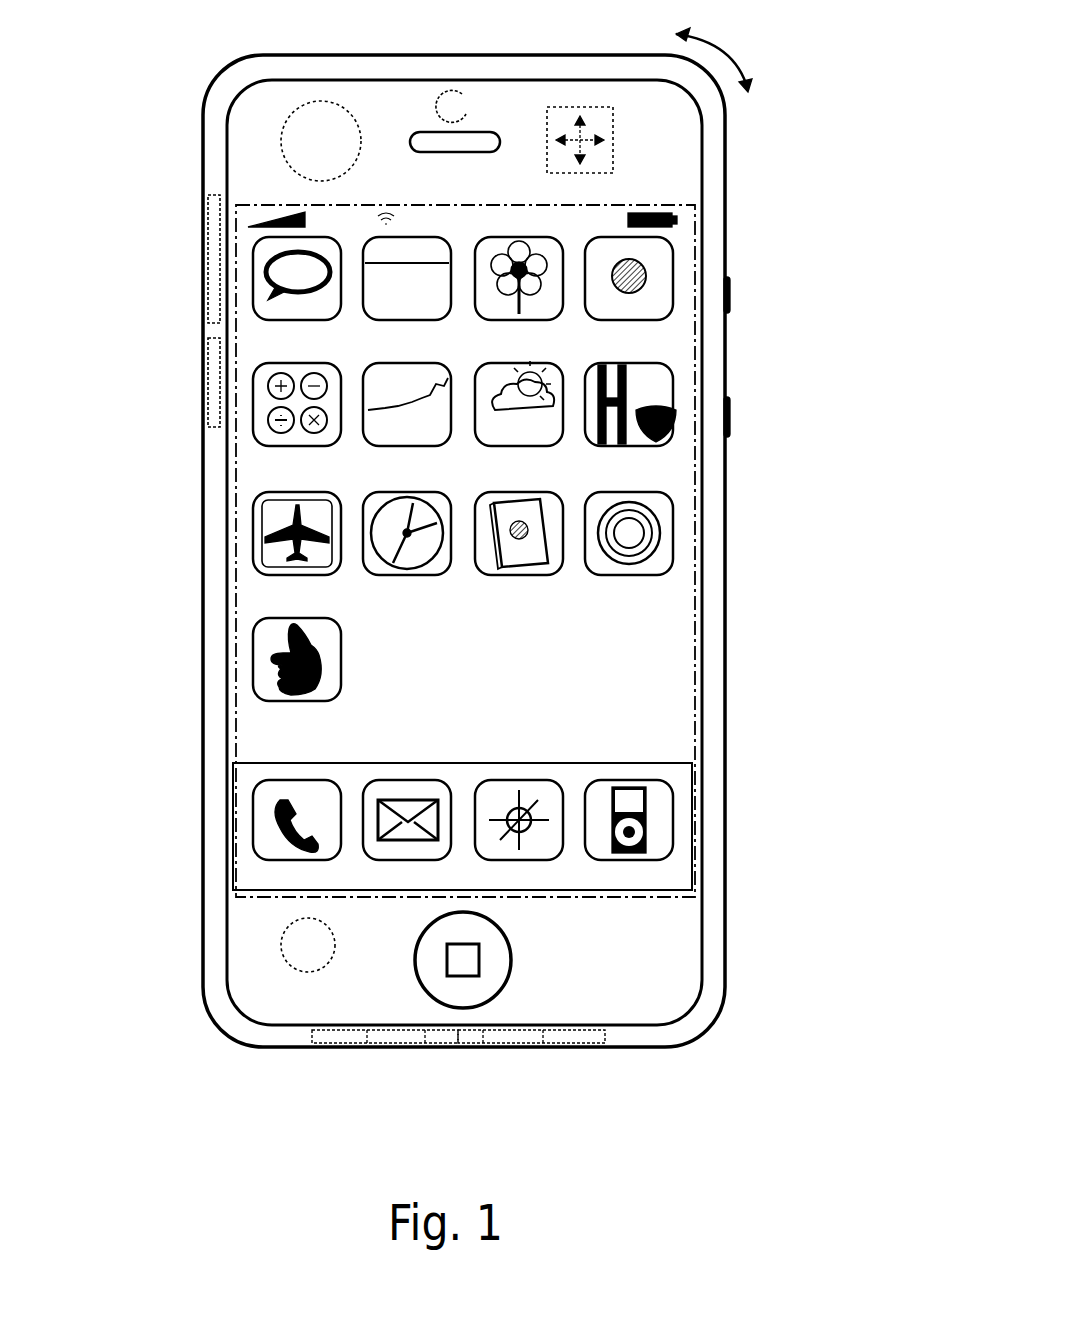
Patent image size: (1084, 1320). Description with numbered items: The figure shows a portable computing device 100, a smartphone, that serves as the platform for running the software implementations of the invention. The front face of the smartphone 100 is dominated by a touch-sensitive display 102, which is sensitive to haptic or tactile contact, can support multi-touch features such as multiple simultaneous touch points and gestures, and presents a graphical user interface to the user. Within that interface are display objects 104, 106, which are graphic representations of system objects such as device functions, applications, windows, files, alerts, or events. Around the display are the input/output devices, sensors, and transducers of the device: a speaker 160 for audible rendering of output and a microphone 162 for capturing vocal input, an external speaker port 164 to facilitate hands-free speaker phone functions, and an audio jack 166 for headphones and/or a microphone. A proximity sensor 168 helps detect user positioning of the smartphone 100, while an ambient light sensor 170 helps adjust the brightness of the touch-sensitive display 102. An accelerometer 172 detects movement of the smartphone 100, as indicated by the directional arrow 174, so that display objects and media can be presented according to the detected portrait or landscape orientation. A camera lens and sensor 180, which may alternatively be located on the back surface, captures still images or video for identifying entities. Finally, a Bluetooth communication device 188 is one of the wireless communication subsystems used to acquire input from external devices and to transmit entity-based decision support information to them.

The portable computing device 100 is at (581, 55).
The touch-sensitive display 102 is at (512, 534).
The display object 104 is at (687, 774).
The display object 106 is at (700, 238).
The speaker 160 is at (440, 152).
The microphone 162 is at (385, 1047).
The external speaker port 164 is at (612, 1047).
The audio jack 166 is at (297, 63).
The proximity sensor 168 is at (289, 154).
The ambient light sensor 170 is at (332, 964).
The accelerometer 172 is at (613, 154).
The directional arrow 174 is at (749, 83).
The camera lens and sensor 180 is at (468, 103).
The Bluetooth communication device 188 is at (207, 335).